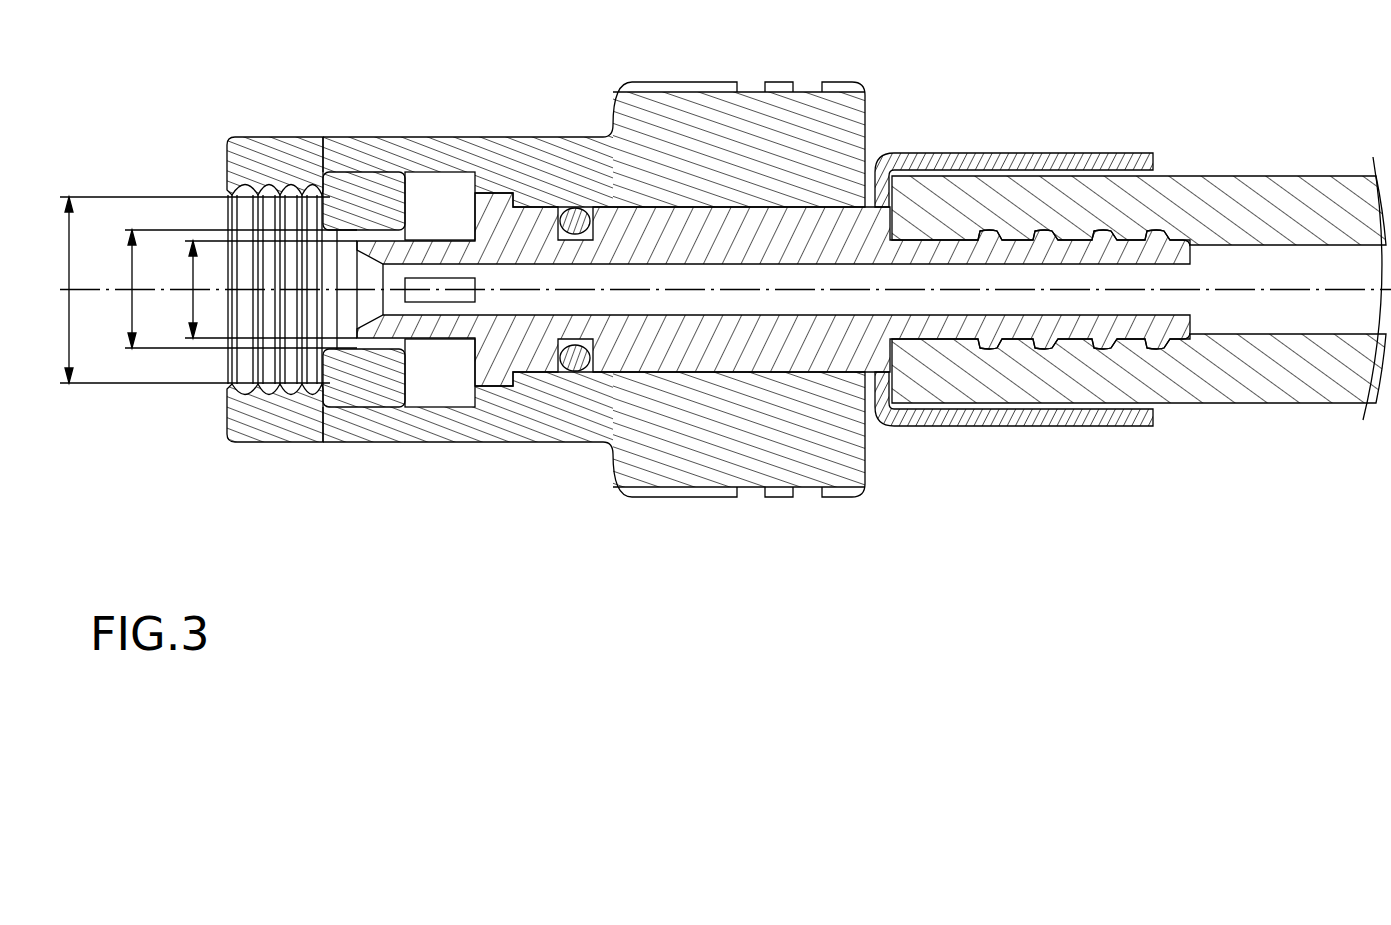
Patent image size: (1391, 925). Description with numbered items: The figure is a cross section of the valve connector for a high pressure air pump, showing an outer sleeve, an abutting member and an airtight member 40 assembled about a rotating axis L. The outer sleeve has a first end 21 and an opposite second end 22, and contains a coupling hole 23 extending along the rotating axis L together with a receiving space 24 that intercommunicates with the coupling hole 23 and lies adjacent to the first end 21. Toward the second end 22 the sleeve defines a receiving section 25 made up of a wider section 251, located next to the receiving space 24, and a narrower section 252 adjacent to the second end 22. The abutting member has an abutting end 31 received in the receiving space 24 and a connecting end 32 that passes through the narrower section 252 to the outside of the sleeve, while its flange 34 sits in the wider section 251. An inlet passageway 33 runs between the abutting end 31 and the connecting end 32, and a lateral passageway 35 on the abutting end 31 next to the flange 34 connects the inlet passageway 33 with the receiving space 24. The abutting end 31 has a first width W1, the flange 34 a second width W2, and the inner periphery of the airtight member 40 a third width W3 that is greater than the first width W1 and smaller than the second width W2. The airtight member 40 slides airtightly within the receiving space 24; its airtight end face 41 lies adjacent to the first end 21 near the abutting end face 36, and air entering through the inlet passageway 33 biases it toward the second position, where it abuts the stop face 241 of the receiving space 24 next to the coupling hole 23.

The first end 21 is at (230, 400).
The second end 22 is at (867, 455).
The coupling hole 23 is at (278, 183).
The receiving space 24 is at (432, 165).
The stop face 241 is at (335, 175).
The receiving section 25 is at (610, 55).
The wider section 251 is at (528, 222).
The narrower section 252 is at (613, 222).
The abutting end 31 is at (433, 345).
The connecting end 32 is at (1182, 352).
The inlet passageway 33 is at (690, 300).
The flange 34 is at (524, 372).
The lateral passageway 35 is at (478, 302).
The abutting end face 36 is at (358, 405).
The airtight member 40 is at (388, 430).
The airtight end face 41 is at (348, 318).
The rotating axis L is at (1318, 290).
The first width W1 is at (247, 289).
The second width W2 is at (69, 235).
The third width W3 is at (216, 289).